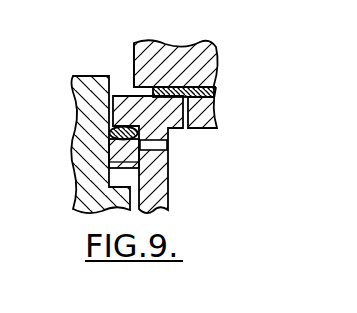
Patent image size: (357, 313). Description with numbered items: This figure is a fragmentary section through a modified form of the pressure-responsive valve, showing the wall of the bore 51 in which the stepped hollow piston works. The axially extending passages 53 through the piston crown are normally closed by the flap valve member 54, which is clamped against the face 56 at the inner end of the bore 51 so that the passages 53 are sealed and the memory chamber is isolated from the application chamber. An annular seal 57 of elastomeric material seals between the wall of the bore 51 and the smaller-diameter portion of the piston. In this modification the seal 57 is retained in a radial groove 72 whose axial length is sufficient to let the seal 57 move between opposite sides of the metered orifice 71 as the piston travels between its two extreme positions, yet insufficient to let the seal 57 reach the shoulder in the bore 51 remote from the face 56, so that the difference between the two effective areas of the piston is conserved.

The bore 51 is at (105, 110).
The axially extending passages 53 is at (207, 70).
The flap valve member 54 is at (163, 87).
The face 56 is at (138, 84).
The annular seal 57 is at (110, 135).
The metered orifice 71 is at (160, 146).
The radial groove 72 is at (128, 150).